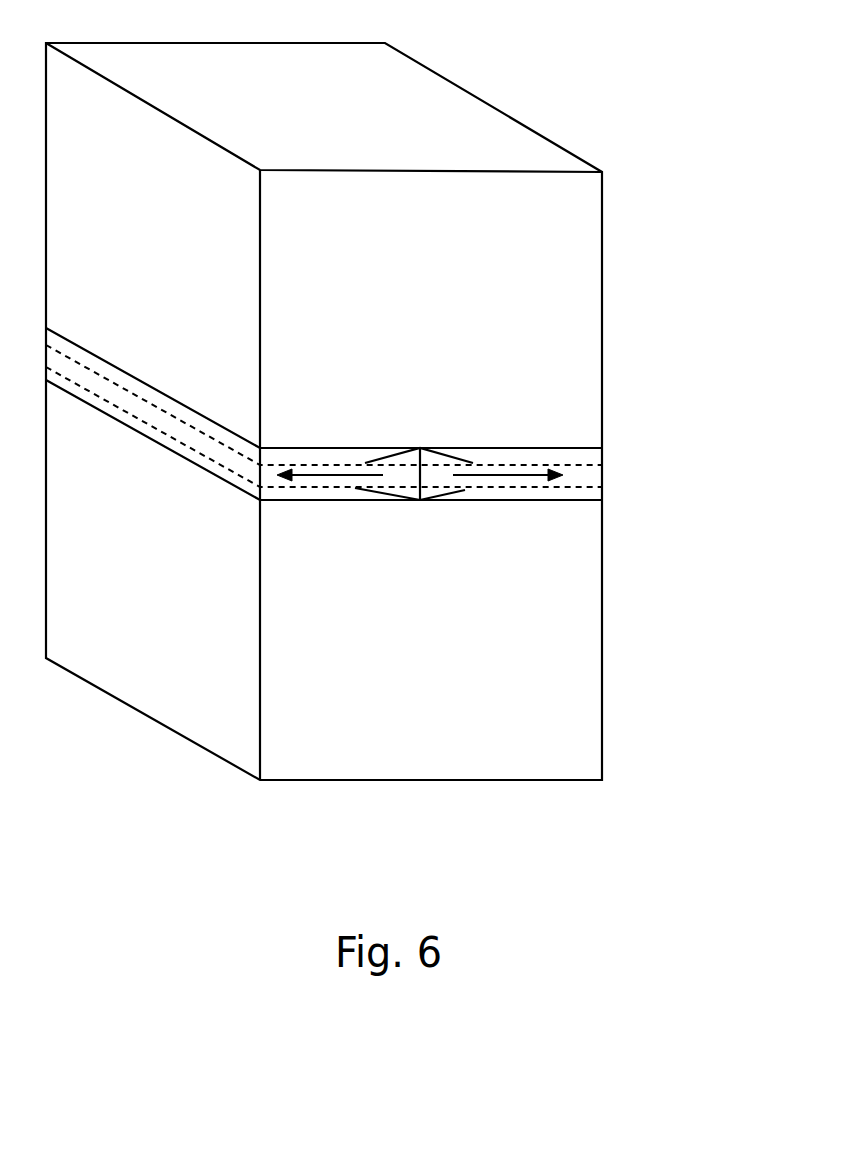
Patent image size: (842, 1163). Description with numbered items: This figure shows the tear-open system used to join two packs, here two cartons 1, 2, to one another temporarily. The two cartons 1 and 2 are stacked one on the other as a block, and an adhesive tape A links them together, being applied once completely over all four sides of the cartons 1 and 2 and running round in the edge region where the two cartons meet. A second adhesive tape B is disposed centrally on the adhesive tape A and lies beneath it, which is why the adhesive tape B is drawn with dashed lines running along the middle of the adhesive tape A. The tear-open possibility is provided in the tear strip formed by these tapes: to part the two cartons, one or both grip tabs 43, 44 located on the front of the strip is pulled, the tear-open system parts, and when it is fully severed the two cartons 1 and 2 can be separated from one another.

The carton 1 is at (324, 245).
The carton 2 is at (324, 580).
The grip tab 43 is at (402, 477).
The grip tab 44 is at (437, 478).
The adhesive tape A is at (573, 460).
The adhesive tape B is at (573, 473).